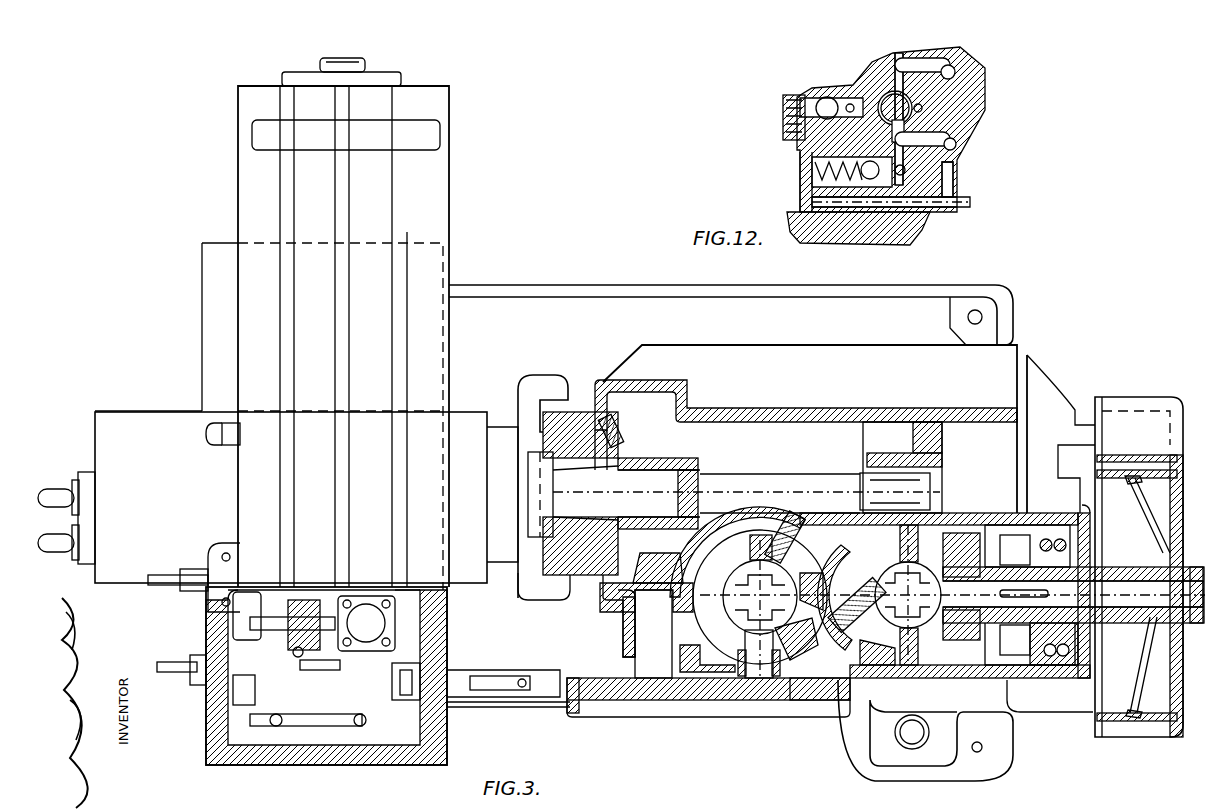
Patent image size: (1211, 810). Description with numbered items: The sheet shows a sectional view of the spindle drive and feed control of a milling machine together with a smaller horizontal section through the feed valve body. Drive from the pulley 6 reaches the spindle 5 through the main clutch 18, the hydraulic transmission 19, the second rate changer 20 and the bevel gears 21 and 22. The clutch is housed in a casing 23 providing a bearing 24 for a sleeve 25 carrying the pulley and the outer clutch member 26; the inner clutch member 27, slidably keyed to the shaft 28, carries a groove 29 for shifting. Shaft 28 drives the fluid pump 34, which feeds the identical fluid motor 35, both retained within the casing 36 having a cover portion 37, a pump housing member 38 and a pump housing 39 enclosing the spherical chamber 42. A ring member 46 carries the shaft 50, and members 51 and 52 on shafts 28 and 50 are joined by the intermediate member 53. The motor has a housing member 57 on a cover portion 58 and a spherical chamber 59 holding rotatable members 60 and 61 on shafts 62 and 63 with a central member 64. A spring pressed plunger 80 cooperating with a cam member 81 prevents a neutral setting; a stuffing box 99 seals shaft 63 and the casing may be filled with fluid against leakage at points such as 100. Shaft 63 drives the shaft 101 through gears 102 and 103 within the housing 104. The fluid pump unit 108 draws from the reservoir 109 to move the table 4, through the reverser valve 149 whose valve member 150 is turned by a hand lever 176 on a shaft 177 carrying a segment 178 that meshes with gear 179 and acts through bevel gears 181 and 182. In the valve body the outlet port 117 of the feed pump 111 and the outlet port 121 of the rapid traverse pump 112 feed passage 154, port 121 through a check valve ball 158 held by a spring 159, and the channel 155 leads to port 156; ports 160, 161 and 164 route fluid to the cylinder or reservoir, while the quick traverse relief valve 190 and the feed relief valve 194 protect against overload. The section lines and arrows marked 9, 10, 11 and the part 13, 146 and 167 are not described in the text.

In FIG. 3, the table 4 is at (835, 545).
In FIG. 3, the spindle 5 is at (647, 480).
In FIG. 3, the pulley 6 is at (183, 723).
In FIG. 3, the section line 9- 9 is at (128, 592).
In FIG. 3, the section line 10- 10 is at (363, 648).
In FIG. 3, the section line 11- 11 is at (303, 600).
In FIG. 12, the section line 11- 11 is at (845, 75).
In FIG. 3, the end housing 13 is at (1126, 734).
In FIG. 3, the main clutch 18 is at (1040, 520).
In FIG. 3, the hydraulic transmission 19 is at (806, 507).
In FIG. 3, the second rate changer 20 is at (748, 706).
In FIG. 3, the bevel gear 21 is at (660, 558).
In FIG. 3, the bevel gear 22 is at (624, 430).
In FIG. 3, the casing 23 is at (960, 520).
In FIG. 3, the bearing 24 is at (1127, 548).
In FIG. 3, the sleeve 25 is at (1110, 626).
In FIG. 3, the outer clutch member 26 is at (1075, 655).
In FIG. 3, the inner clutch member 27 is at (1030, 632).
In FIG. 3, the shaft 28 is at (1096, 594).
In FIG. 3, the groove 29 is at (1012, 560).
In FIG. 3, the fluid pump 34 is at (868, 470).
In FIG. 3, the fluid motor 35 is at (735, 545).
In FIG. 3, the casing 36 is at (818, 502).
In FIG. 3, the cover portion 37 is at (947, 552).
In FIG. 3, the pump housing member 38 is at (942, 640).
In FIG. 3, the pump housing 39 is at (882, 652).
In FIG. 3, the spherical chamber 42 is at (935, 662).
In FIG. 3, the ring member 46 is at (867, 575).
In FIG. 3, the shaft 50 is at (853, 596).
In FIG. 3, the rotatable member 51 is at (952, 595).
In FIG. 3, the rotatable member 52 is at (884, 599).
In FIG. 3, the intermediate member 53 is at (909, 595).
In FIG. 3, the housing member 57 is at (803, 650).
In FIG. 3, the cover portion 58 is at (712, 664).
In FIG. 3, the spherical chamber 59 is at (666, 622).
In FIG. 3, the rotatable member 60 is at (754, 588).
In FIG. 3, the rotatable member 61 is at (760, 606).
In FIG. 3, the shaft 62 is at (777, 550).
In FIG. 3, the shaft 63 is at (757, 638).
In FIG. 3, the central member 64 is at (768, 595).
In FIG. 3, the spring pressed plunger 80 is at (901, 467).
In FIG. 3, the cam member 81 is at (902, 491).
In FIG. 3, the stuffing box 99 is at (812, 690).
In FIG. 3, the leakage point 100 is at (854, 585).
In FIG. 3, the shaft 101 is at (653, 630).
In FIG. 3, the gear 102 is at (792, 698).
In FIG. 3, the gear 103 is at (640, 700).
In FIG. 3, the housing 104 is at (702, 705).
In FIG. 3, the fluid pump unit 108 is at (420, 665).
In FIG. 3, the fluid reservoir 109 is at (430, 746).
In FIG. 3, the control lever 146 is at (177, 662).
In FIG. 3, the reverser valve 149 is at (303, 656).
In FIG. 3, the cover 167 is at (408, 588).
In FIG. 3, the hand lever 176 is at (178, 576).
In FIG. 3, the shaft 177 is at (240, 556).
In FIG. 3, the segment 178 is at (256, 594).
In FIG. 3, the gear 179 is at (250, 676).
In FIG. 3, the bevel gear 181 is at (312, 604).
In FIG. 3, the bevel gear 182 is at (357, 595).
In FIG. 12, the feed pump 111 is at (800, 207).
In FIG. 12, the rapid traverse pump 112 is at (975, 203).
In FIG. 12, the outlet port 117 is at (804, 177).
In FIG. 12, the outlet port 121 is at (958, 178).
In FIG. 12, the rotatable valve member 150 is at (912, 108).
In FIG. 12, the passage 154 is at (808, 133).
In FIG. 12, the channel 155 is at (838, 99).
In FIG. 12, the port 156 is at (882, 105).
In FIG. 12, the check valve ball 158 is at (882, 193).
In FIG. 12, the spring 159 is at (814, 165).
In FIG. 12, the port 160 is at (954, 72).
In FIG. 12, the port 161 is at (958, 143).
In FIG. 12, the port 164 is at (912, 118).
In FIG. 12, the quick traverse pressure relief valve 190 is at (960, 212).
In FIG. 12, the feed pressure relief valve 194 is at (816, 88).